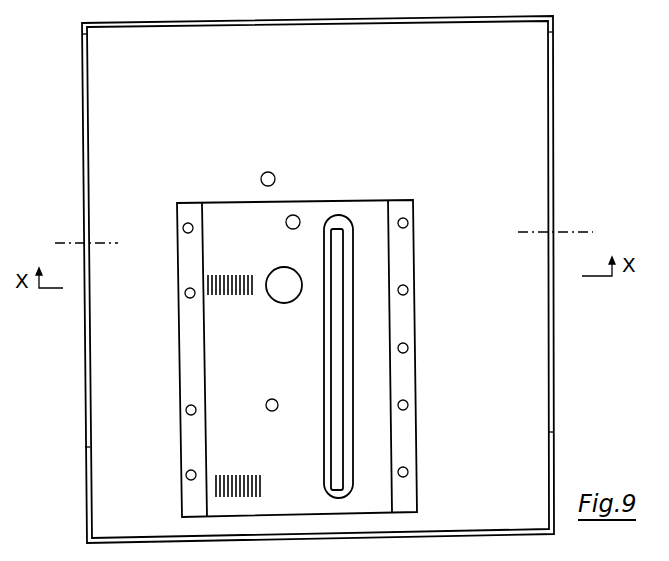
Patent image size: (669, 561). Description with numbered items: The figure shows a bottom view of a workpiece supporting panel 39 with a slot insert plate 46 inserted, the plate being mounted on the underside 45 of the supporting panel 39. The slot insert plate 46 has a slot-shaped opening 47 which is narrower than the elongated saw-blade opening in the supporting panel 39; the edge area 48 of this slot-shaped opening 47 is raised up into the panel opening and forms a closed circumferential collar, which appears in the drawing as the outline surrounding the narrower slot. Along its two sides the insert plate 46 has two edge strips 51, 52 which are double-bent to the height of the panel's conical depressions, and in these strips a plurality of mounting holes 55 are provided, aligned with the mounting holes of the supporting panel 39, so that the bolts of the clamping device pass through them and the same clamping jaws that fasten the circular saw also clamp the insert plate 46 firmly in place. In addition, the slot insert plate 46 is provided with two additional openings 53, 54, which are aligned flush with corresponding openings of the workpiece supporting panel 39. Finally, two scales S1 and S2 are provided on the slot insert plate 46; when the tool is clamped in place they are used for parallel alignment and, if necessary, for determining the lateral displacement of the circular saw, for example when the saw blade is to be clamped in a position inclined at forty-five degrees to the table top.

The workpiece supporting panel 39 is at (556, 140).
The underside of the panel 45 is at (516, 126).
The slot insert plate 46 is at (373, 195).
The slot-shaped opening 47 is at (341, 326).
The edge area 48 is at (350, 408).
The edge strip 51 is at (194, 357).
The edge strip 52 is at (405, 373).
The additional opening 53 is at (273, 399).
The additional opening 54 is at (277, 293).
The mounting holes 55 is at (184, 230).
The scale S1 is at (226, 278).
The scale S2 is at (231, 480).